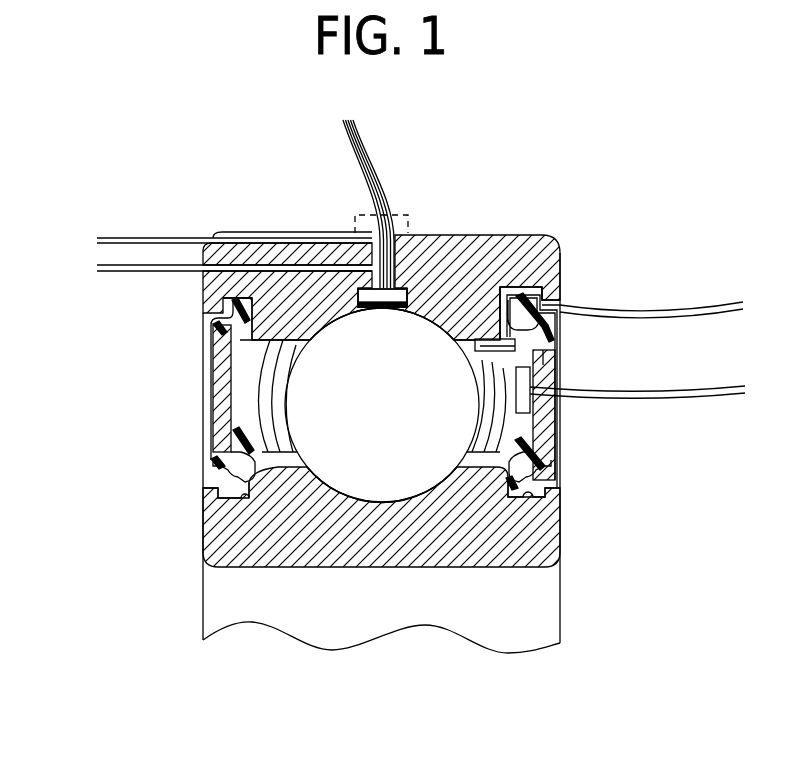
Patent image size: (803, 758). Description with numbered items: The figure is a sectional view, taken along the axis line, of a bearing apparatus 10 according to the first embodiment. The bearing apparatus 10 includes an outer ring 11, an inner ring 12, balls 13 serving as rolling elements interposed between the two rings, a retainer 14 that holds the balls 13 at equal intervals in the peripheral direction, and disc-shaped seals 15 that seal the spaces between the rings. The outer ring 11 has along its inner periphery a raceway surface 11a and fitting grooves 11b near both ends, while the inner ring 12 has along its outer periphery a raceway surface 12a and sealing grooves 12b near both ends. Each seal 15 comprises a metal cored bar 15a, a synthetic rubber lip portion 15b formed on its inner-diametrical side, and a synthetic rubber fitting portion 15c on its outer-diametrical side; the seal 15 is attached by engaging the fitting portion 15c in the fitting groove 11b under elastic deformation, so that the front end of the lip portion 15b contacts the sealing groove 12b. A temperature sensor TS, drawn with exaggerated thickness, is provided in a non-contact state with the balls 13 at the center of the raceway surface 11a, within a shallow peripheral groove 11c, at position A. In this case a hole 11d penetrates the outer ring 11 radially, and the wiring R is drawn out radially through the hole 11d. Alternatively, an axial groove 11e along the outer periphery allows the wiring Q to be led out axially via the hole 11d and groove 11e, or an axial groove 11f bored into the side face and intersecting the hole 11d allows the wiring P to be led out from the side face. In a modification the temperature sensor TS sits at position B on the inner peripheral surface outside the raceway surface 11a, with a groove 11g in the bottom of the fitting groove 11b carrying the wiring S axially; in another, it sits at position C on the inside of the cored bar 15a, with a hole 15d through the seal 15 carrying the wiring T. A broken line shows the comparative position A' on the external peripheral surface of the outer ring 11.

The bearing apparatus 10 is at (660, 197).
The outer ring 11 is at (432, 245).
The raceway surface 11a is at (320, 332).
The fitting grooves 11b is at (223, 307).
The peripheral groove 11c is at (396, 309).
The hole 11d is at (370, 255).
The groove 11e is at (245, 240).
The groove 11f is at (203, 262).
The groove 11g is at (530, 283).
The inner ring 12 is at (557, 553).
The raceway surface 12a is at (385, 505).
The sealing grooves 12b is at (238, 568).
The balls 13 is at (333, 330).
The retainer 14 is at (497, 432).
The seal 15 is at (203, 407).
The cored bar 15a is at (233, 432).
The lip portion 15b is at (215, 462).
The fitting portion 15c is at (228, 320).
The hole 15d is at (547, 402).
The position A is at (391, 205).
The position A' is at (352, 168).
The position B is at (487, 321).
The position C is at (552, 361).
The wiring P is at (110, 263).
The wiring Q is at (127, 236).
The wiring R is at (367, 189).
The wiring S is at (693, 308).
The wiring T is at (712, 389).
The temperature sensor TS is at (400, 215).